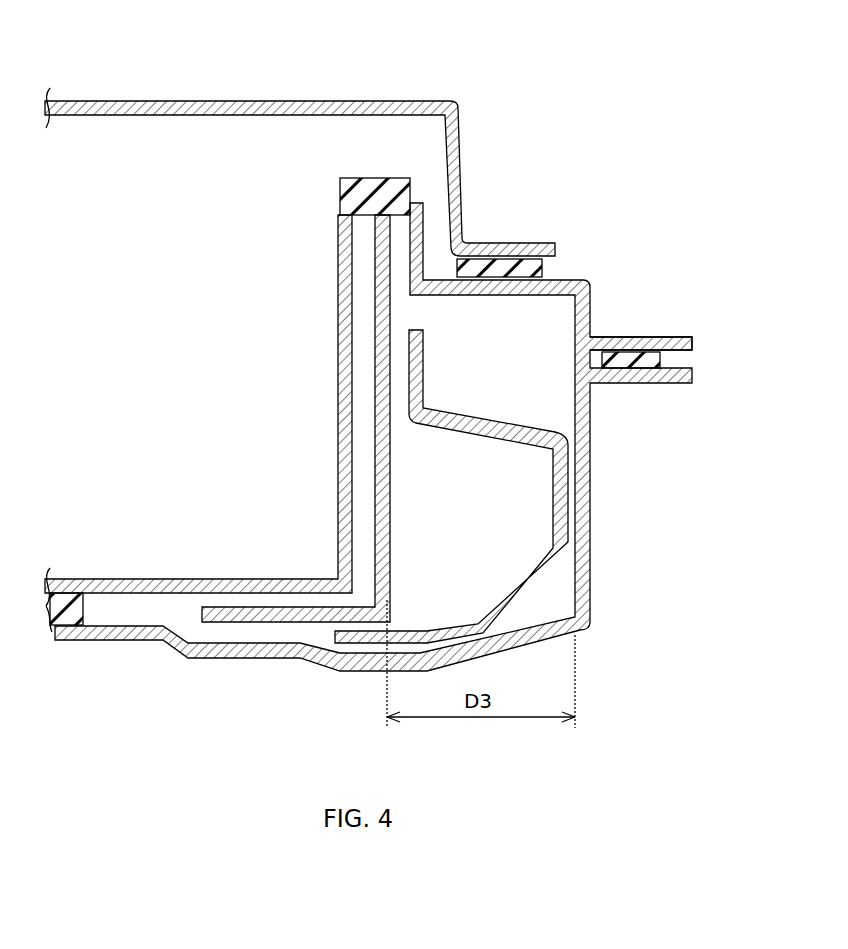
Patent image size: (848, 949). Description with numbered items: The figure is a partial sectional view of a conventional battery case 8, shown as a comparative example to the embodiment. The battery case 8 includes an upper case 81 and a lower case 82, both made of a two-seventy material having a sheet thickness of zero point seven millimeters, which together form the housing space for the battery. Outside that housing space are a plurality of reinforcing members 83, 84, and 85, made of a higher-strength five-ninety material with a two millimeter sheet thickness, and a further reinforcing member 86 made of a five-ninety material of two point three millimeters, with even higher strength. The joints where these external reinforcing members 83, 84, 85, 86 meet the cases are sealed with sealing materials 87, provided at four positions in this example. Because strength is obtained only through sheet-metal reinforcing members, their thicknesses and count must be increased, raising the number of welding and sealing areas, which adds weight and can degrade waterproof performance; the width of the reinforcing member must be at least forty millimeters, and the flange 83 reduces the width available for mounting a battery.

The battery case 8 is at (565, 131).
The upper case 81 is at (252, 100).
The lower case 82 is at (150, 578).
The reinforcing member 83 is at (675, 338).
The reinforcing member 84 is at (590, 483).
The reinforcing member 85 is at (390, 480).
The reinforcing member 86 is at (472, 415).
The sealing material 87 is at (338, 193).